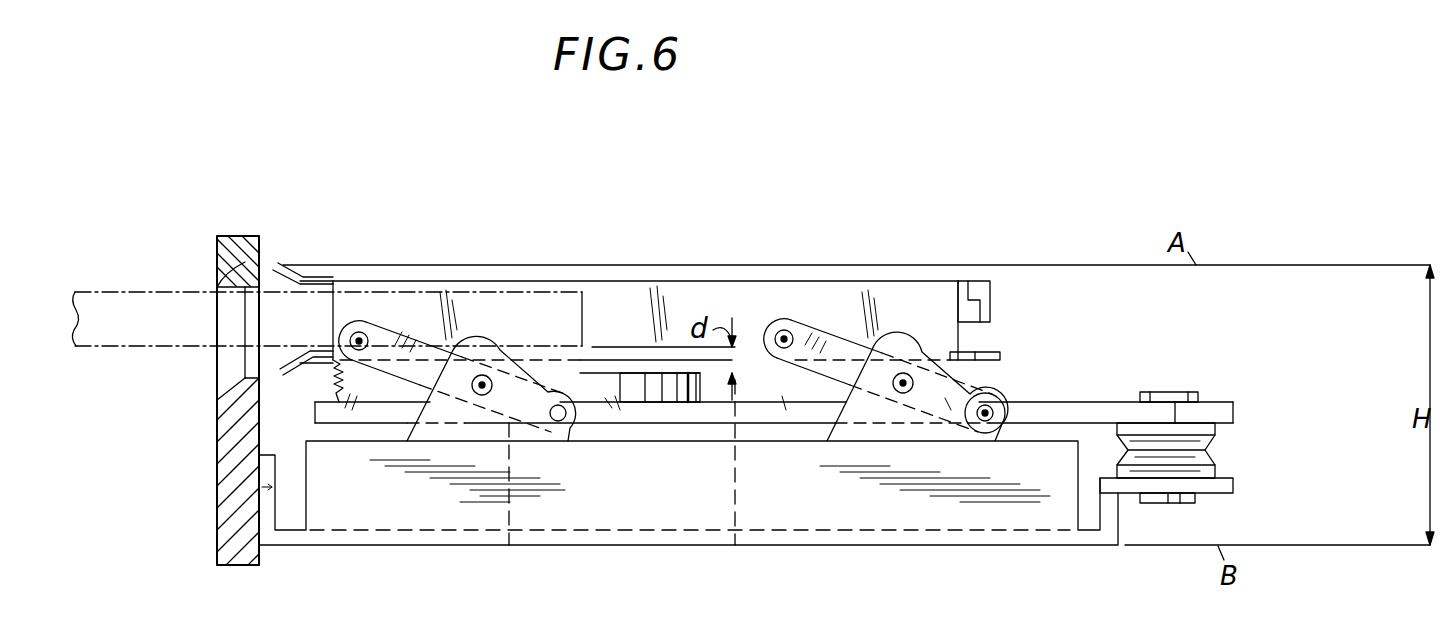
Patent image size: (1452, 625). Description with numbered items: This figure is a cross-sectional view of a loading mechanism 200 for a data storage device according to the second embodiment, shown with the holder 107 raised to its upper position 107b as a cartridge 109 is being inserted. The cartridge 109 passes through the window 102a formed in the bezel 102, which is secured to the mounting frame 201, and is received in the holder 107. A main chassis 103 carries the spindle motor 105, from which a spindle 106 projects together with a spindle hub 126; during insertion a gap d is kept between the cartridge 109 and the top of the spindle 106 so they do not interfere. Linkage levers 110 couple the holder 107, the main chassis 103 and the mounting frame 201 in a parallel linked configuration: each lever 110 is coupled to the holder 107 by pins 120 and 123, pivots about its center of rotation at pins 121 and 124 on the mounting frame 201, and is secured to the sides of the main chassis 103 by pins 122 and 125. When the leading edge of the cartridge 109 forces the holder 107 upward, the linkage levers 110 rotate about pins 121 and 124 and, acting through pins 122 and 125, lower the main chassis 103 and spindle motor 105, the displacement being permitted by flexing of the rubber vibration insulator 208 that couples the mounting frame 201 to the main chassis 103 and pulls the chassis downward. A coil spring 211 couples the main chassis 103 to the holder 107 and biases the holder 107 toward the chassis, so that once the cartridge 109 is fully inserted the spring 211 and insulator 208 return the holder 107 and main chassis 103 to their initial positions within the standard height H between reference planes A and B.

The bezel 102 is at (240, 566).
The window 102a is at (215, 278).
The main chassis 103 is at (1090, 406).
The spindle motor 105 is at (742, 537).
The spindle 106 is at (627, 368).
The holder 107 is at (546, 280).
The upper position of holder 107b is at (433, 280).
The cartridge 109 is at (133, 308).
The linkage lever 110 is at (382, 322).
The pin 120 is at (357, 330).
The pin 121 is at (485, 380).
The pin 122 is at (580, 440).
The pin 123 is at (783, 328).
The pin 124 is at (903, 372).
The pin 125 is at (992, 405).
The spindle hub 126 is at (663, 392).
The loading mechanism 200 is at (1032, 238).
The mounting frame 201 is at (1103, 542).
The rubber vibration insulator 208 is at (1210, 466).
The coil spring 211 is at (352, 396).